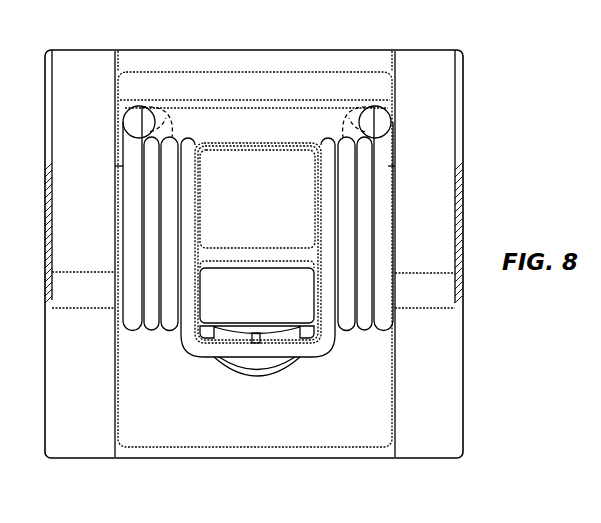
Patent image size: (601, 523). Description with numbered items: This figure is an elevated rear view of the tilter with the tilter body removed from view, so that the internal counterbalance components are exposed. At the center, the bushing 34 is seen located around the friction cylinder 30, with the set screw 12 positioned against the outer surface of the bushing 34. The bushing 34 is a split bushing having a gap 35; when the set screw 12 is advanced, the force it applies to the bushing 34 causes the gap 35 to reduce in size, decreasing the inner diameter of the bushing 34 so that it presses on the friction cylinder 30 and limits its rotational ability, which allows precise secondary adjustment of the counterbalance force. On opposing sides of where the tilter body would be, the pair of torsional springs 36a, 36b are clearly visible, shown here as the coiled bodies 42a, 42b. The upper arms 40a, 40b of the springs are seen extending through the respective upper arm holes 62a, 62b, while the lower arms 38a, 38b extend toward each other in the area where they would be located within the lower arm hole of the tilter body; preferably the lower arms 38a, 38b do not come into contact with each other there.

The set screw 12 is at (250, 366).
The friction cylinder 30 is at (252, 255).
The bushing 34 is at (277, 173).
The gap 35 is at (219, 263).
The spring 36a is at (362, 302).
The spring 36b is at (147, 302).
The lower arm 38a is at (298, 353).
The lower arm 38b is at (213, 354).
The upper arm 40a is at (383, 128).
The upper arm 40b is at (131, 128).
The right bellows 42a is at (358, 190).
The left bellows 42b is at (156, 190).
The upper arm hole 62a is at (353, 113).
The upper arm hole 62b is at (156, 113).